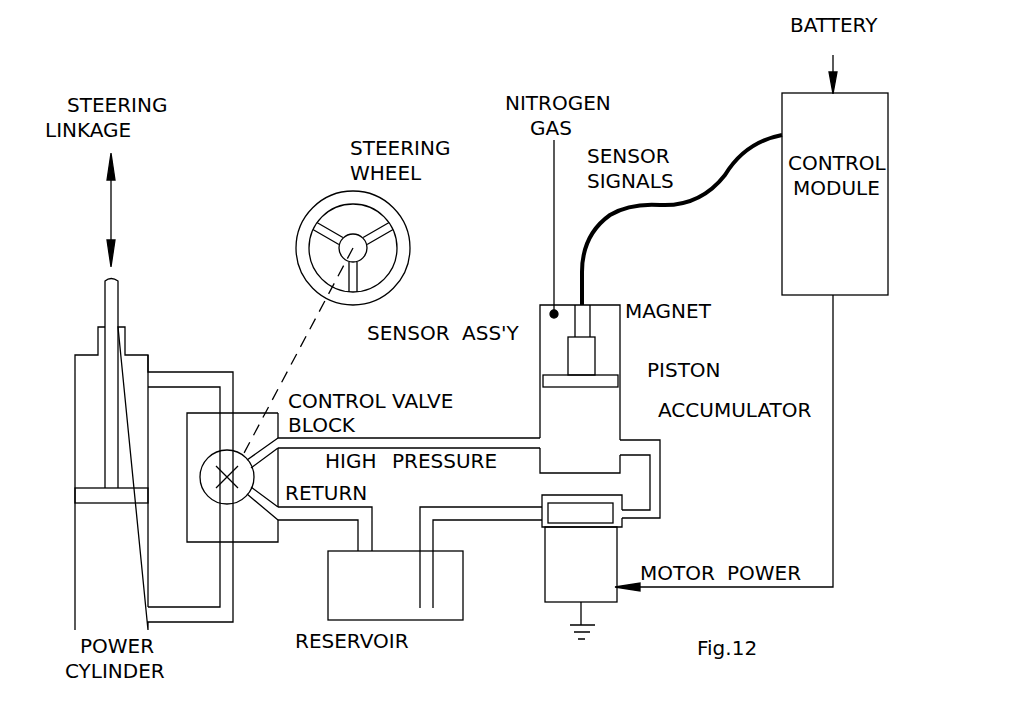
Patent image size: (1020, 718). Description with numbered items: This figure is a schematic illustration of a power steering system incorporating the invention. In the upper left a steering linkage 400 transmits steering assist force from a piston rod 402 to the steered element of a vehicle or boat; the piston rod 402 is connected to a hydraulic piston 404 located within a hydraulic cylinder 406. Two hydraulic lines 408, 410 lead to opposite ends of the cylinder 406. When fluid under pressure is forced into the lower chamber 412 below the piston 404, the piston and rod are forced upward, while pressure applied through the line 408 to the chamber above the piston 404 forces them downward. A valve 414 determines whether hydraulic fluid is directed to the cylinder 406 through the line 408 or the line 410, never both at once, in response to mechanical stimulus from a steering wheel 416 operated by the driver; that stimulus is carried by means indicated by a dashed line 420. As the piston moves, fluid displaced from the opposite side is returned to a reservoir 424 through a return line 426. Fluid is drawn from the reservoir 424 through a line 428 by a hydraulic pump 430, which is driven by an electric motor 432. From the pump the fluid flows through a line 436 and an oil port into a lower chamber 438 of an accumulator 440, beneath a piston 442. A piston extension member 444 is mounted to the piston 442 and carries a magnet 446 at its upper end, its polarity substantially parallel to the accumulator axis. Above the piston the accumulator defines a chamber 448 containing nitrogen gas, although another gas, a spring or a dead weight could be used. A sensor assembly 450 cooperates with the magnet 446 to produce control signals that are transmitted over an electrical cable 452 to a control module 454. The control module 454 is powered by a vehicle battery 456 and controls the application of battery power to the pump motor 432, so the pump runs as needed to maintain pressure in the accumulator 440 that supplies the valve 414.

The steering linkage 400 is at (146, 192).
The piston rod 402 is at (115, 300).
The hydraulic piston 404 is at (95, 500).
The hydraulic cylinder 406 is at (150, 586).
The hydraulic line 408 is at (175, 377).
The hydraulic line 410 is at (183, 620).
The lower chamber 412 is at (128, 613).
The valve 414 is at (243, 497).
The steering wheel 416 is at (410, 248).
The mechanical stimulus means 420 is at (287, 370).
The reservoir 424 is at (425, 622).
The return line 426 is at (368, 533).
The line 428 is at (473, 513).
The hydraulic pump 430 is at (625, 523).
The electric motor 432 is at (603, 602).
The line 436 is at (660, 478).
The lower chamber 438 is at (603, 463).
The accumulator 440 is at (620, 412).
The piston 442 is at (466, 438).
The piston extension member 444 is at (603, 362).
The magnet 446 is at (595, 340).
The chamber 448 is at (552, 357).
The sensor assembly 450 is at (577, 317).
The electrical cable 452 is at (618, 213).
The control module 454 is at (808, 250).
The vehicle battery 456 is at (831, 62).